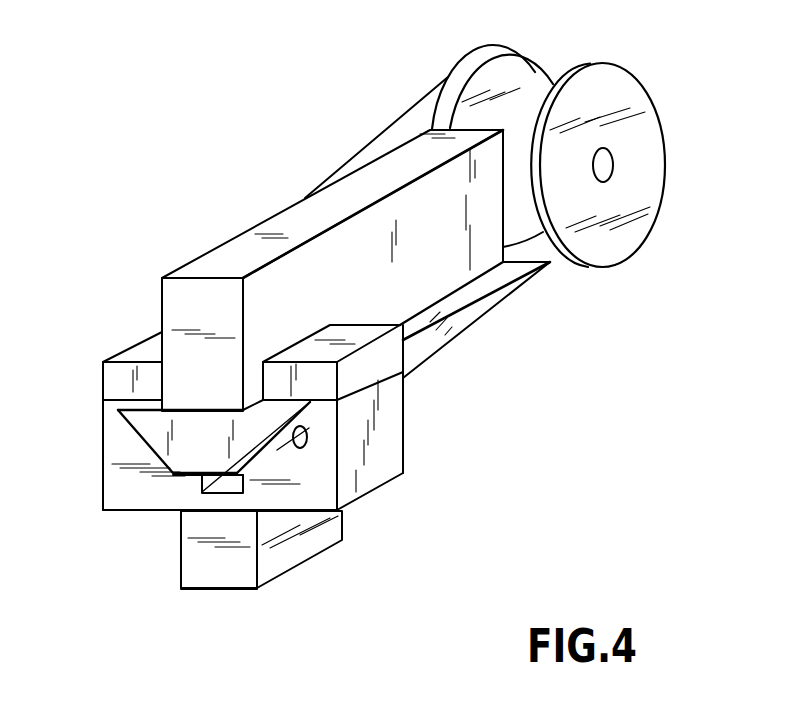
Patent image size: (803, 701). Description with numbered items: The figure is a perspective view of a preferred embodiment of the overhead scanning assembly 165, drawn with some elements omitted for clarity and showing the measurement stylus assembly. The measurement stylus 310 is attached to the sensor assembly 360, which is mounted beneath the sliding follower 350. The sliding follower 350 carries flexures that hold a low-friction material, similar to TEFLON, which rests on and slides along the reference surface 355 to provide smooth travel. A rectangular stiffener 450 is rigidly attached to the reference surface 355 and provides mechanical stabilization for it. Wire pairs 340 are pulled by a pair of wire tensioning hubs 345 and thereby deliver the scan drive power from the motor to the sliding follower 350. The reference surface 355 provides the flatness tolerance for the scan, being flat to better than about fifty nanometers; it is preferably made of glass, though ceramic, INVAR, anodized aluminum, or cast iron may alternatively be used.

The film transport assembly 165 is at (448, 534).
The measurement stylus 310 is at (217, 590).
The wire pairs 340 is at (407, 207).
The wire tensioning hubs 345 is at (507, 60).
The sliding follower 350 is at (103, 479).
The reference surface 355 is at (447, 318).
The sensor assembly 360 is at (318, 556).
The rectangular stiffener 450 is at (237, 252).